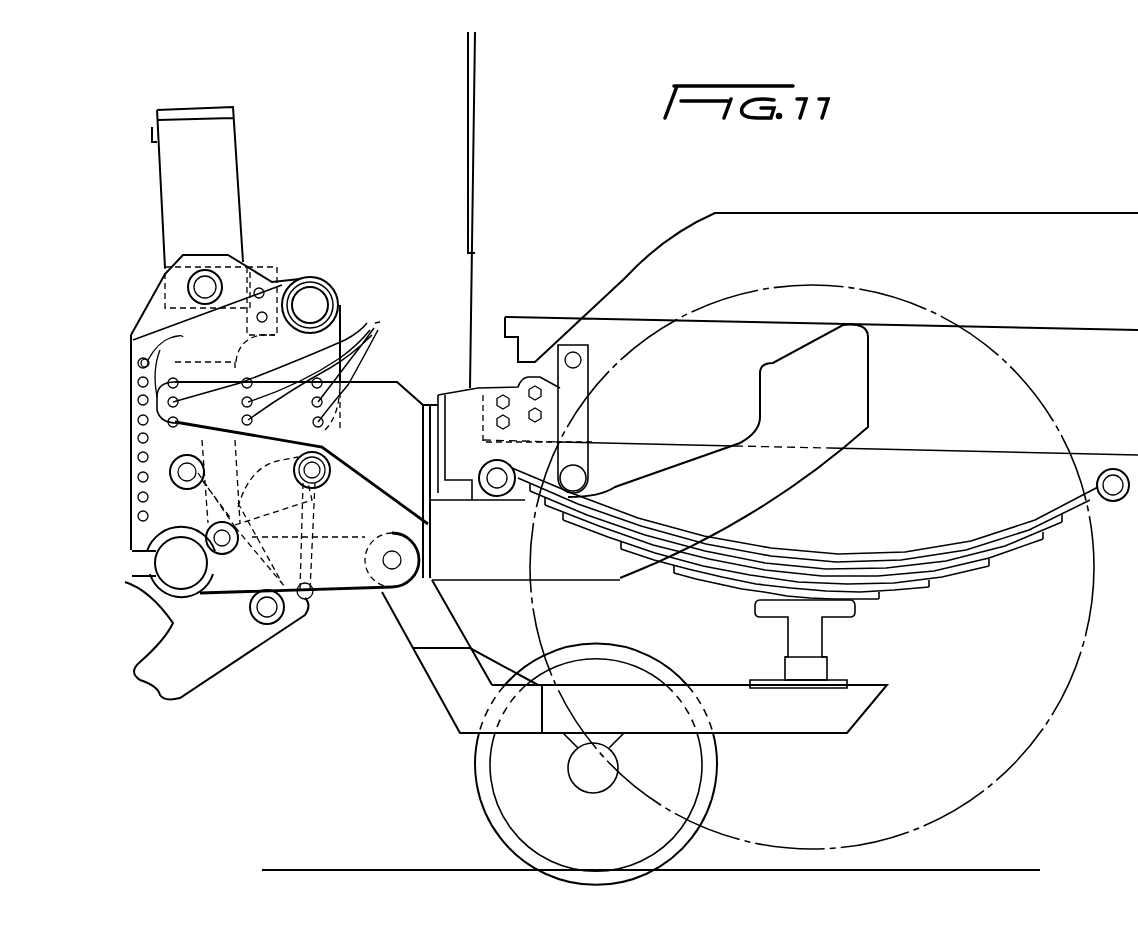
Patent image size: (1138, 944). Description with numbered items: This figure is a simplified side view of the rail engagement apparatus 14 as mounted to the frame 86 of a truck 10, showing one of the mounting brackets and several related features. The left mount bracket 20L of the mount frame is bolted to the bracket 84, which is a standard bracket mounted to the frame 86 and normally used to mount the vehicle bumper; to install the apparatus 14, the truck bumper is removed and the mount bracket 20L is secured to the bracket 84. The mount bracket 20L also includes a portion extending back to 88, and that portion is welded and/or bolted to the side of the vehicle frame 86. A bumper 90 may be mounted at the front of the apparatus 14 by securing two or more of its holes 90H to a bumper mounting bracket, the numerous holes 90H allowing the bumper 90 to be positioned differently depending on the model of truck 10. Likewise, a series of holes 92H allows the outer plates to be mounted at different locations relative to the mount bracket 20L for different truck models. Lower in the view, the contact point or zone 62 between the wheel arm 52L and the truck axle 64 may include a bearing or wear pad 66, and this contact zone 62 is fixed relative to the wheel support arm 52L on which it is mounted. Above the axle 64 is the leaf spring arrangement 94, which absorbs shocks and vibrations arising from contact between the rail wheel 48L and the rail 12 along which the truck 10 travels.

The truck 10 is at (468, 130).
The apparatus 14 is at (308, 268).
The holes 92H is at (371, 318).
The holes 90H is at (185, 360).
The left anchor piece 20L is at (390, 380).
The bracket 84 is at (535, 362).
The frame 86 is at (1012, 328).
The portion 88 is at (813, 352).
The leaf spring arrangement 94 is at (842, 556).
The axle 64 is at (822, 637).
The contact point or zone 62 is at (785, 680).
The bearing or wear pad 66 is at (847, 684).
The wheel arm 52L is at (880, 708).
The rail wheel 48L is at (712, 768).
The rails 12 is at (945, 870).
The bumper 90 is at (219, 610).